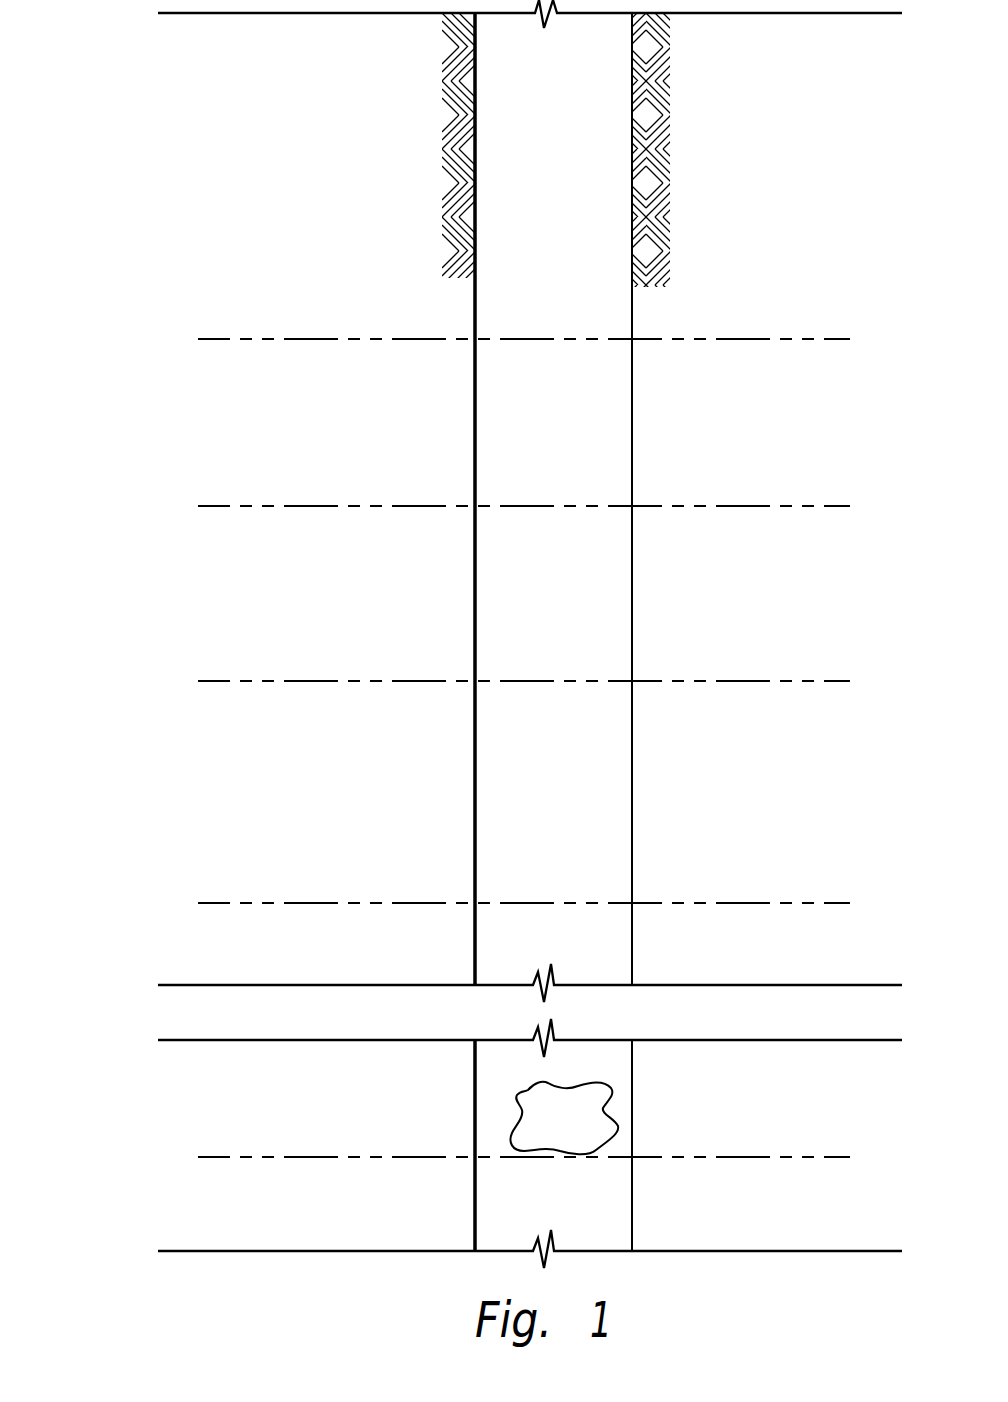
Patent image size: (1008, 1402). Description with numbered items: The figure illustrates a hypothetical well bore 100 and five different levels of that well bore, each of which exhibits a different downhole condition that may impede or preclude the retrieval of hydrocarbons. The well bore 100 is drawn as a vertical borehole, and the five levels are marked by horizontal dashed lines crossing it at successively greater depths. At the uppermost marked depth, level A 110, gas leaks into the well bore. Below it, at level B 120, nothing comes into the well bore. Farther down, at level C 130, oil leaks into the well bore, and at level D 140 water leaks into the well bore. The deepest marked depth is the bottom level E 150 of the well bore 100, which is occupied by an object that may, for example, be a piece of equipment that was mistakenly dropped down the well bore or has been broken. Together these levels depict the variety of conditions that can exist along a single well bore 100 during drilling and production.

The well bore 100 is at (632, 434).
The level A 110 is at (738, 338).
The level B 120 is at (738, 505).
The level C 130 is at (738, 680).
The level D 140 is at (738, 902).
The level E 150 is at (738, 1156).